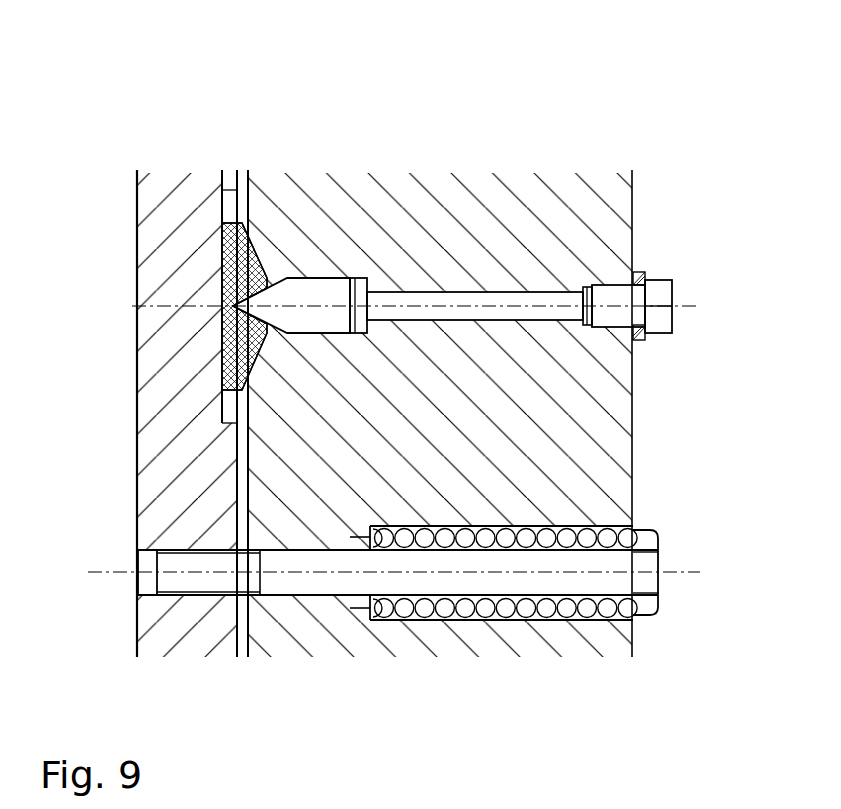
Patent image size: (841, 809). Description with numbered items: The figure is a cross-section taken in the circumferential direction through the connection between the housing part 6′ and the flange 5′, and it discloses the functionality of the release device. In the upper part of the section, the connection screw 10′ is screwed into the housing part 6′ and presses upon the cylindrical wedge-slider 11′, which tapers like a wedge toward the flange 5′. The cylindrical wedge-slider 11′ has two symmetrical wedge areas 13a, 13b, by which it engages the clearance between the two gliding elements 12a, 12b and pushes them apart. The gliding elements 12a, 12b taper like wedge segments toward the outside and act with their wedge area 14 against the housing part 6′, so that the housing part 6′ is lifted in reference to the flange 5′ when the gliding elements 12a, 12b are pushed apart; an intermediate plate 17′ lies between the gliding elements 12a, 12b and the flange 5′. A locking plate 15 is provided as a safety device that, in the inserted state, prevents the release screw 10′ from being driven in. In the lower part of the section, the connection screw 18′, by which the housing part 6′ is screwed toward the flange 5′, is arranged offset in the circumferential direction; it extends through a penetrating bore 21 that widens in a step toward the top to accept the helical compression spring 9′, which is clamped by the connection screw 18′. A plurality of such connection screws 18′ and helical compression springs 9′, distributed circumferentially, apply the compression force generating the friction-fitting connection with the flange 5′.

The flange 5′ is at (165, 641).
The housing part 6′ is at (322, 641).
The helical compression spring 9′ is at (545, 641).
The connection screw 10′ is at (560, 326).
The cylindrical wedge-slider 11′ is at (304, 290).
The gliding element 12a is at (220, 243).
The gliding element 12b is at (222, 380).
The wedge area 13a is at (222, 283).
The wedge area 13b is at (222, 342).
The wedge area 14 is at (250, 225).
The locking plate 15 is at (640, 272).
The intermediate plate 17′ is at (228, 190).
The connection screw 18′ is at (640, 641).
The penetrating bore 21 is at (463, 641).